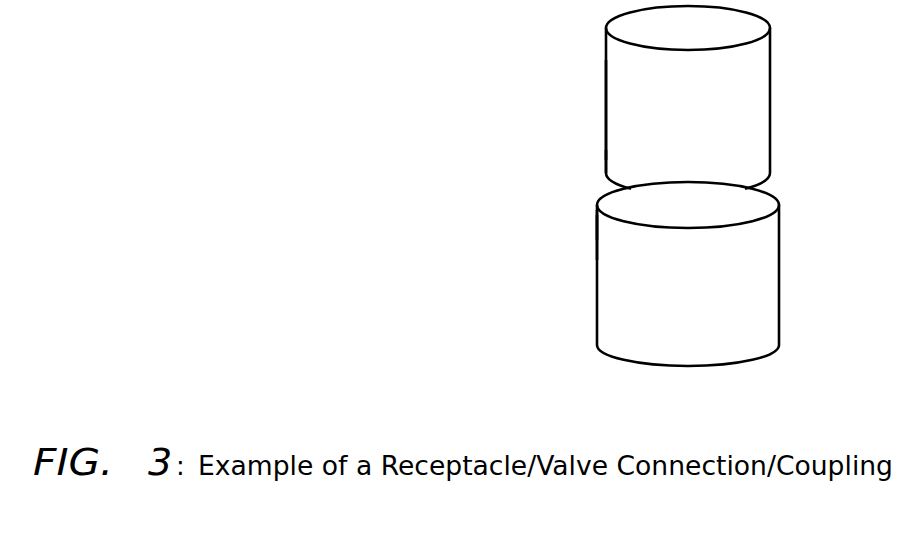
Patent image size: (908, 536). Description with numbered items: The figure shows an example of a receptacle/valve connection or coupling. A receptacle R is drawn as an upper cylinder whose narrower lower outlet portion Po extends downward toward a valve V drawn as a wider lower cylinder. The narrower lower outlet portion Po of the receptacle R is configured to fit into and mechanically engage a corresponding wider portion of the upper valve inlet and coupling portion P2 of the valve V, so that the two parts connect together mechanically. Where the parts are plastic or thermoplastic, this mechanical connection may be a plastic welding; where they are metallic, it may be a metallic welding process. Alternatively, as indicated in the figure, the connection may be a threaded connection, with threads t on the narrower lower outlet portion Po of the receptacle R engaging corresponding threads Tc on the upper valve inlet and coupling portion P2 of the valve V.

The receptacle R is at (586, 48).
The narrower lower outlet portion Po is at (571, 115).
The threads t is at (640, 168).
The valve V is at (578, 309).
The upper valve inlet and coupling portion P2 is at (576, 223).
The corresponding threads Tc is at (767, 205).